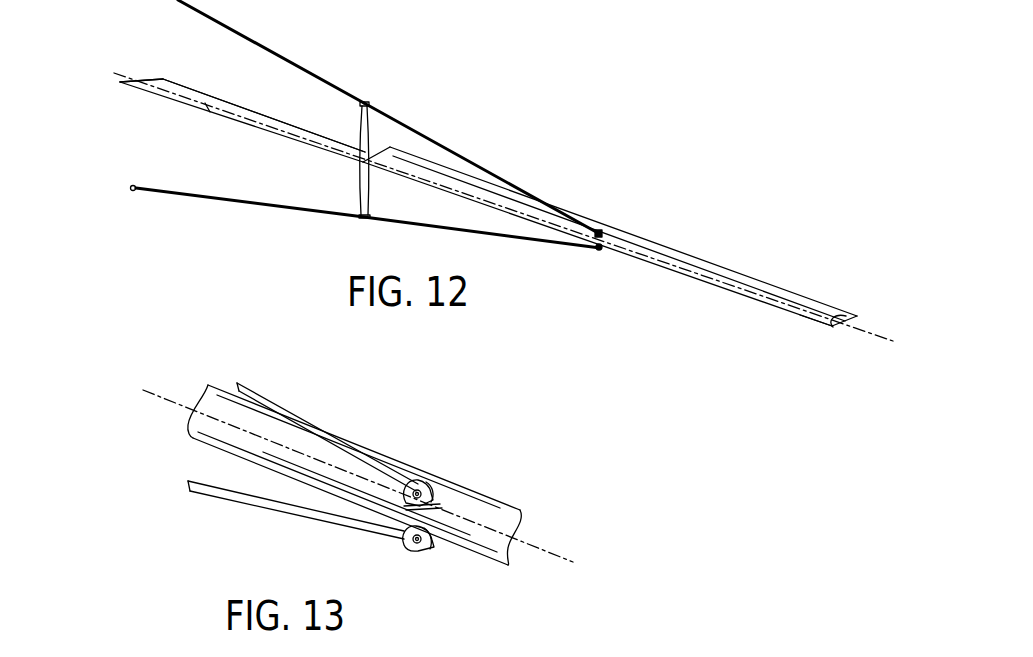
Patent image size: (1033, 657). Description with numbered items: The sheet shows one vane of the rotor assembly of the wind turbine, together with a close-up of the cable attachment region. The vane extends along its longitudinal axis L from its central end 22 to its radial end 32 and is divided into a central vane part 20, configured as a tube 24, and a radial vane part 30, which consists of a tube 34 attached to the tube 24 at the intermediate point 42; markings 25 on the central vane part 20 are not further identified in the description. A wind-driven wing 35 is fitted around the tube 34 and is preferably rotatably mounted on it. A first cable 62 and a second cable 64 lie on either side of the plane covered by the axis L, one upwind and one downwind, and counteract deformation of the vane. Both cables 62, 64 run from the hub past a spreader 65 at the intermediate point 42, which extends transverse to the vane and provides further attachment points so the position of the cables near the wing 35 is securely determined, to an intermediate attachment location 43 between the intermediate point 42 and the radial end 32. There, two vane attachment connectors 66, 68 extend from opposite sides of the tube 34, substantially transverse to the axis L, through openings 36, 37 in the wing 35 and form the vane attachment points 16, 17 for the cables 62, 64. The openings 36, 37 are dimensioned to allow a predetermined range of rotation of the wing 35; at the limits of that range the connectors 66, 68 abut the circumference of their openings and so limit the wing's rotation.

In FIG. 13, the vane attachment point 16 is at (402, 577).
In FIG. 13, the vane attachment point 17 is at (435, 454).
In FIG. 12, the central vane part 20 is at (242, 89).
In FIG. 12, the central end 22 is at (136, 79).
In FIG. 12, the tube 24 is at (224, 97).
In FIG. 12, the blade edges 25 is at (188, 86).
In FIG. 12, the radial vane part 30 is at (549, 180).
In FIG. 12, the radial end 32 is at (822, 322).
In FIG. 12, the tube 34 is at (839, 324).
In FIG. 12, the wing 35 is at (618, 270).
In FIG. 13, the wing 35 is at (370, 497).
In FIG. 13, the opening 36 is at (410, 508).
In FIG. 13, the opening 37 is at (443, 545).
In FIG. 12, the intermediate point 42 is at (357, 168).
In FIG. 12, the intermediate attachment location 43 is at (597, 249).
In FIG. 12, the first cable 62 is at (265, 207).
In FIG. 13, the first cable 62 is at (247, 495).
In FIG. 12, the second cable 64 is at (388, 116).
In FIG. 13, the second cable 64 is at (274, 403).
In FIG. 12, the spreader 65 is at (375, 135).
In FIG. 13, the vane attachment connector 66 is at (416, 556).
In FIG. 13, the vane attachment connector 68 is at (422, 478).
In FIG. 12, the longitudinal axis L is at (856, 327).
In FIG. 13, the longitudinal axis L is at (561, 560).